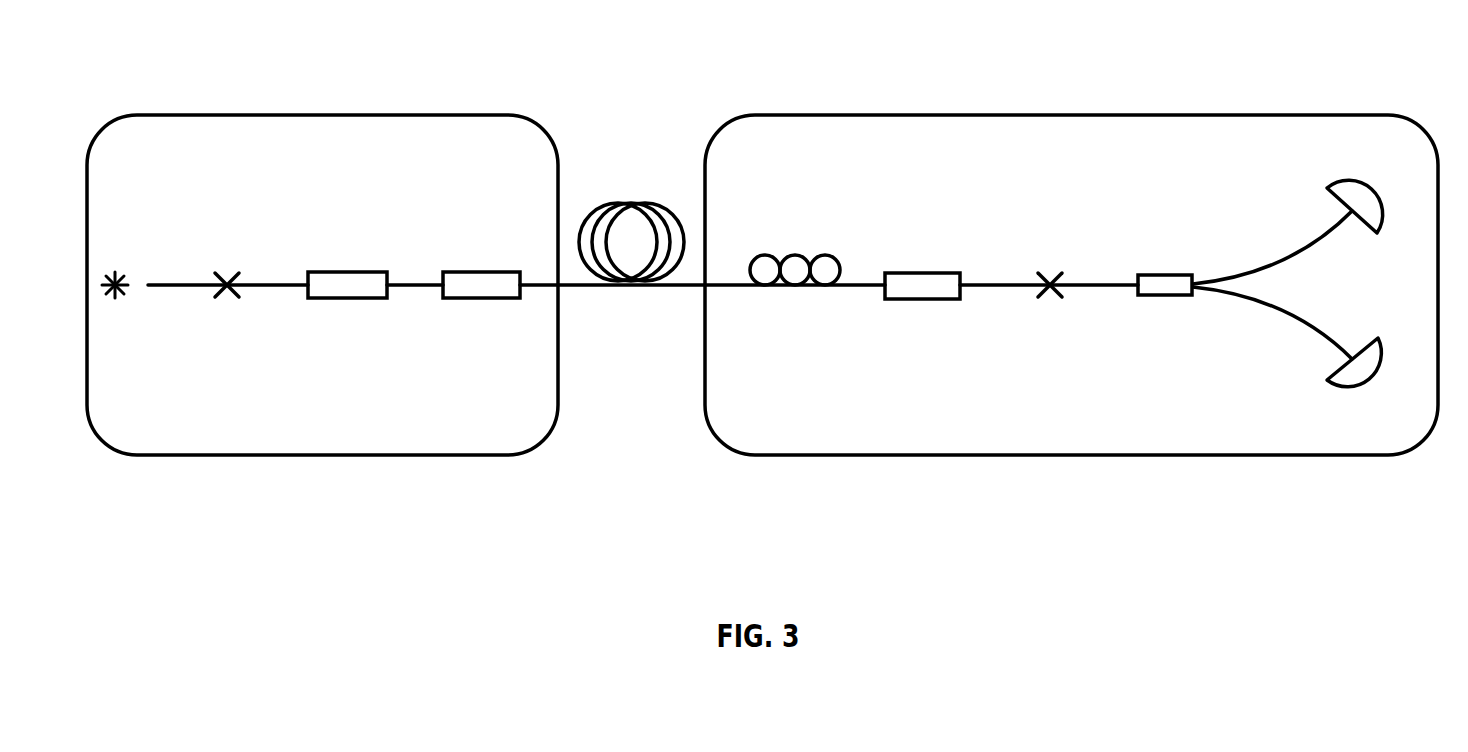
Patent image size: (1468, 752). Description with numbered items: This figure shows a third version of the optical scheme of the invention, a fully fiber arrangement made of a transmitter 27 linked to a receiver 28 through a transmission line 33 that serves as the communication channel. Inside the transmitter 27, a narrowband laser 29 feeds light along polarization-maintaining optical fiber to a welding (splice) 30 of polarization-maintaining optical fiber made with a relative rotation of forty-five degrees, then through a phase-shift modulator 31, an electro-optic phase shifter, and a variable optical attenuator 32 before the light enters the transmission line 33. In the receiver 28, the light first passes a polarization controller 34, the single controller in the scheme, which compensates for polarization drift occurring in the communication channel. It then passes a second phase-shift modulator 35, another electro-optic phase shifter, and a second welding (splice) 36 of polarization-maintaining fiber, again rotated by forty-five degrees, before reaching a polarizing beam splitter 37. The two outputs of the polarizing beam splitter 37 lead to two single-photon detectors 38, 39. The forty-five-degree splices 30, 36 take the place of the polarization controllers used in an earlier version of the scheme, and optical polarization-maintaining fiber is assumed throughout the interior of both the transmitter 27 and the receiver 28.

The transmitter 27 is at (322, 243).
The receiver 28 is at (1071, 235).
The narrowband laser 29 is at (173, 326).
The welding (splice) of polarization-maintaining optical fiber 30 is at (225, 239).
The phase-shift modulator 31 is at (348, 227).
The variable optical attenuator 32 is at (478, 318).
The transmission line 33 is at (627, 166).
The polarization controller 34 is at (796, 219).
The phase-shift modulator 35 is at (928, 315).
The welding (splice) of polarization-maintaining optical fiber 36 is at (1050, 236).
The polarizing beam splitter 37 is at (1227, 289).
The single-photon detector 38 is at (1367, 139).
The single-photon detector 39 is at (1338, 431).